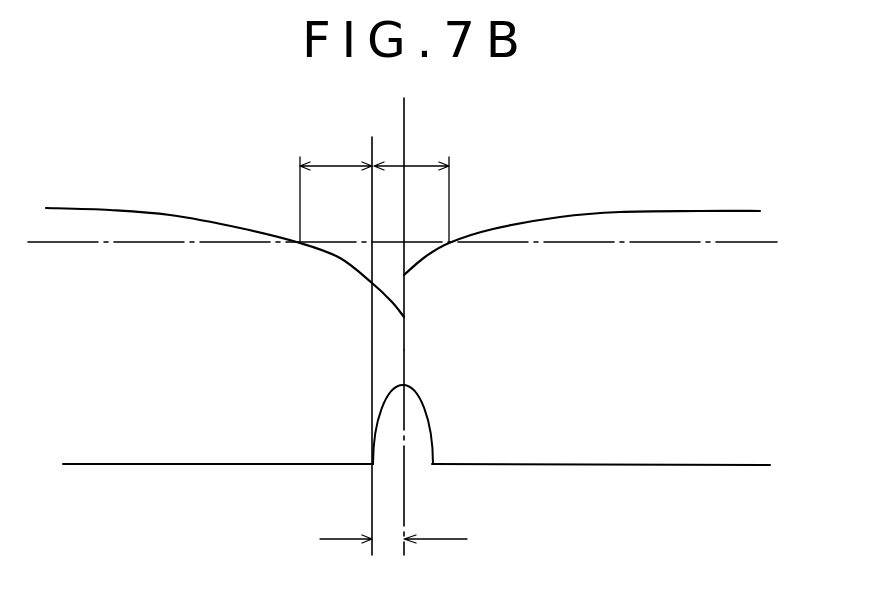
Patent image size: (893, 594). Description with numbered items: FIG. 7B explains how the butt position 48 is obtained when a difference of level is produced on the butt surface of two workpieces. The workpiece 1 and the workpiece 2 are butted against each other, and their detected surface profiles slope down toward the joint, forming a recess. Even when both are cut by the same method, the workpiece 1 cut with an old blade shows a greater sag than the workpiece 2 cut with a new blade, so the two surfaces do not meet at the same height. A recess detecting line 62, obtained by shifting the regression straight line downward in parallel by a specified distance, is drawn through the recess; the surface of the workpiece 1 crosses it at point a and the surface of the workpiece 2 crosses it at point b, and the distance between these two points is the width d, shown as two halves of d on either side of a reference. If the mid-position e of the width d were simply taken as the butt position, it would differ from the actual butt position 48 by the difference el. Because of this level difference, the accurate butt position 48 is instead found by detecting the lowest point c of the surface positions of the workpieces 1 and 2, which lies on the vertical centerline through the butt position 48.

The workpiece 1 is at (173, 215).
The workpiece 2 is at (663, 211).
The recess detecting line 62 is at (246, 243).
The butt position 48 is at (404, 350).
The crossing point a is at (300, 243).
The crossing point b is at (449, 243).
The lowest point c is at (404, 317).
The mid-position e is at (372, 507).
The difference el is at (445, 525).
The width d is at (294, 112).